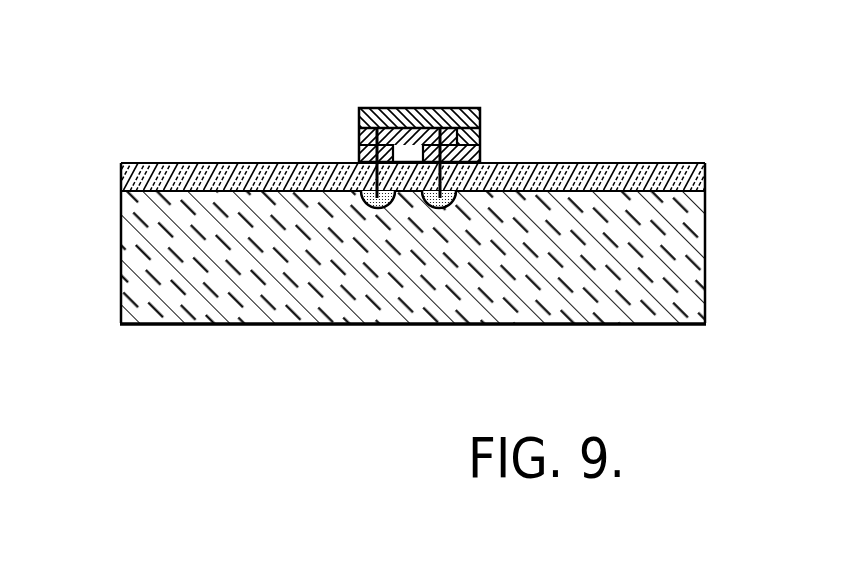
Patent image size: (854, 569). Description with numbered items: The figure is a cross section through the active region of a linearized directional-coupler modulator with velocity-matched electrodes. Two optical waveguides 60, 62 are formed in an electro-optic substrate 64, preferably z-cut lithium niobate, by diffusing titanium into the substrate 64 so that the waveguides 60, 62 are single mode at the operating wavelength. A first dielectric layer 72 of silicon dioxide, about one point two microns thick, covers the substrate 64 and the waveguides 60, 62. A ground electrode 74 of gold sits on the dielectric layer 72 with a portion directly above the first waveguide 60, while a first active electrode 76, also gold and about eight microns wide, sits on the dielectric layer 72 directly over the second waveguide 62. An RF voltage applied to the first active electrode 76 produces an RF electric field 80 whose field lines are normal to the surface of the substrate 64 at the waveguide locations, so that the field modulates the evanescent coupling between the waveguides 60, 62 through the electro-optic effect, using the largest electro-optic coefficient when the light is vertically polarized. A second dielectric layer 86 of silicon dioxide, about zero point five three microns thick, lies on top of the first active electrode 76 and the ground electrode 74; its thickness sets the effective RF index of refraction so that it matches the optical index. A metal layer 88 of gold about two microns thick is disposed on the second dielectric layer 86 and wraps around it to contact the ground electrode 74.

The first optical waveguide 60 is at (454, 209).
The second optical waveguide 62 is at (364, 208).
The electro-optic substrate 64 is at (648, 326).
The first dielectric layer 72 is at (121, 163).
The ground electrode 74 is at (480, 152).
The first active electrode 76 is at (359, 148).
The RF electric field lines 80 is at (438, 208).
The second dielectric layer 86 is at (424, 108).
The metal layer 88 is at (402, 108).